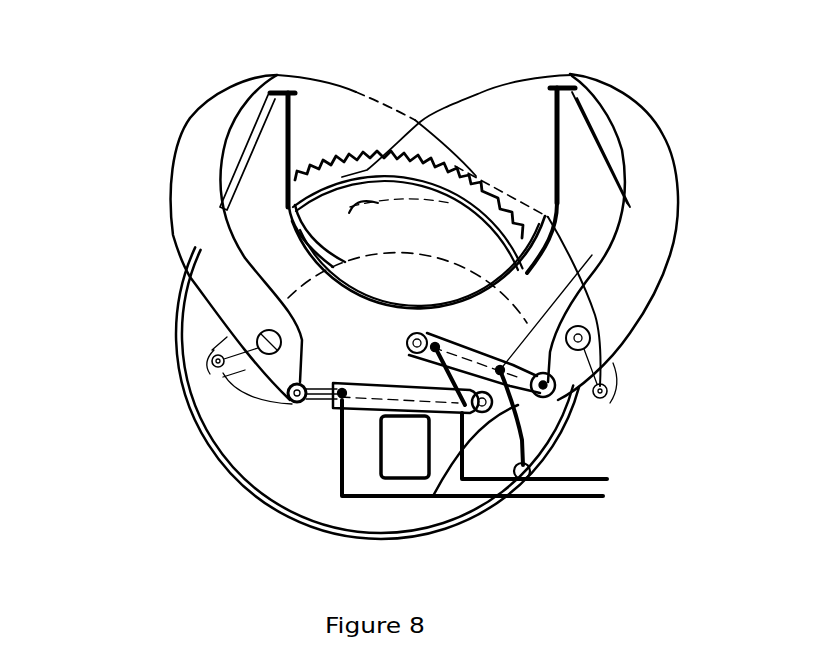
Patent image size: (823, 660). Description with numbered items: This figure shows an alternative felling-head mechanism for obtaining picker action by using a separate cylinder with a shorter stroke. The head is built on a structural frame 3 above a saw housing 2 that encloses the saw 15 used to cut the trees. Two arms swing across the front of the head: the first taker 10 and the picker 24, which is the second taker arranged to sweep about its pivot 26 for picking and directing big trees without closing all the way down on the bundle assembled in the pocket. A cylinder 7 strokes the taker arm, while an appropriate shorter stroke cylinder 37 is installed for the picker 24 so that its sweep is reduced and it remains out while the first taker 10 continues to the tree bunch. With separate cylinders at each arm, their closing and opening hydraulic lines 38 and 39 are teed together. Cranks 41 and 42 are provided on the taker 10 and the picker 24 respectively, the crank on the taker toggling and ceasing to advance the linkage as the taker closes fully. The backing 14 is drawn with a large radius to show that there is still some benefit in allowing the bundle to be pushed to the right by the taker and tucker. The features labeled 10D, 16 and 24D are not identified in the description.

The saw housing 2 is at (317, 535).
The structural frame 3 is at (382, 447).
The cylinder 7 is at (292, 402).
The first taker 10 is at (172, 207).
The jaw strut 10D is at (287, 170).
The backing 14 is at (522, 253).
The saw 15 is at (343, 167).
The pivot 16 is at (258, 336).
The picker 24 is at (657, 127).
The jaw insert 24D is at (503, 172).
The pivot 26 is at (587, 330).
The shorter stroke cylinder 37 is at (527, 372).
The closing hydraulic line 38 is at (607, 479).
The opening hydraulic line 39 is at (603, 496).
The crank 41 is at (213, 350).
The crank 42 is at (610, 360).